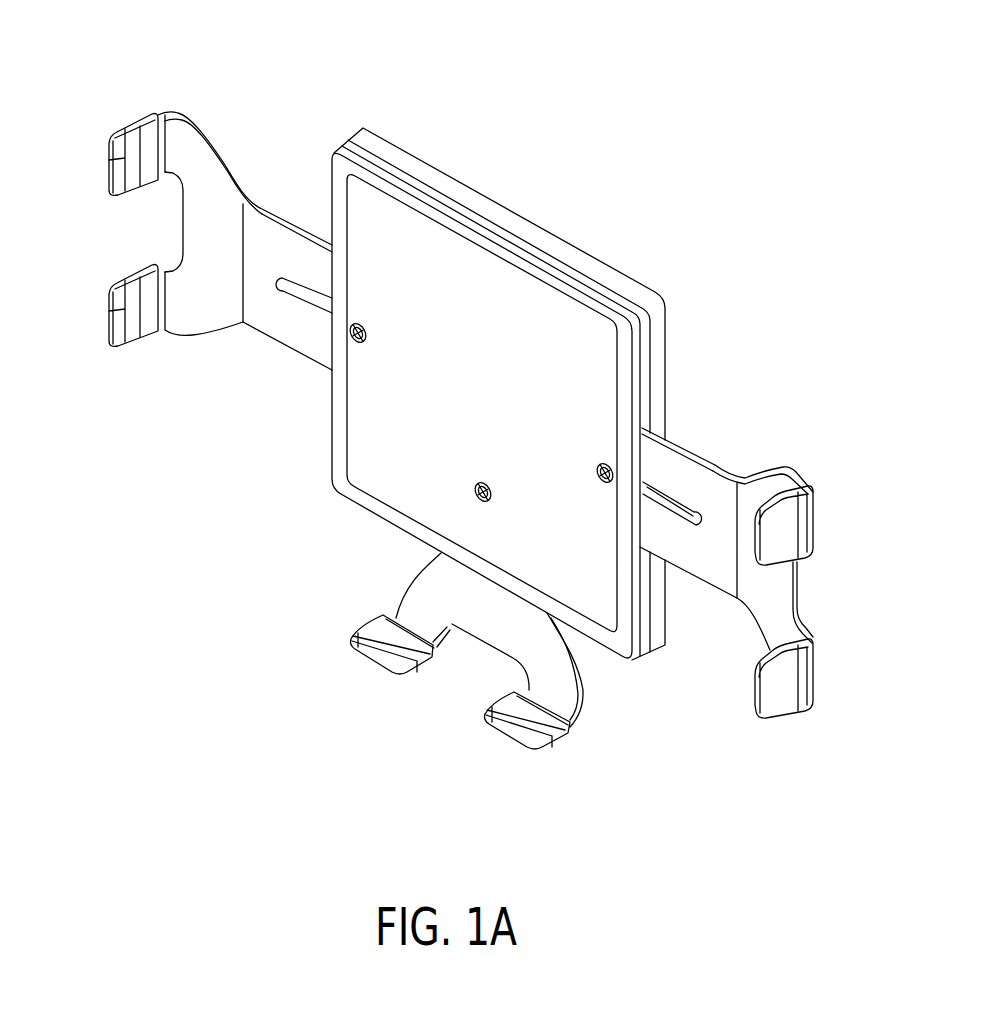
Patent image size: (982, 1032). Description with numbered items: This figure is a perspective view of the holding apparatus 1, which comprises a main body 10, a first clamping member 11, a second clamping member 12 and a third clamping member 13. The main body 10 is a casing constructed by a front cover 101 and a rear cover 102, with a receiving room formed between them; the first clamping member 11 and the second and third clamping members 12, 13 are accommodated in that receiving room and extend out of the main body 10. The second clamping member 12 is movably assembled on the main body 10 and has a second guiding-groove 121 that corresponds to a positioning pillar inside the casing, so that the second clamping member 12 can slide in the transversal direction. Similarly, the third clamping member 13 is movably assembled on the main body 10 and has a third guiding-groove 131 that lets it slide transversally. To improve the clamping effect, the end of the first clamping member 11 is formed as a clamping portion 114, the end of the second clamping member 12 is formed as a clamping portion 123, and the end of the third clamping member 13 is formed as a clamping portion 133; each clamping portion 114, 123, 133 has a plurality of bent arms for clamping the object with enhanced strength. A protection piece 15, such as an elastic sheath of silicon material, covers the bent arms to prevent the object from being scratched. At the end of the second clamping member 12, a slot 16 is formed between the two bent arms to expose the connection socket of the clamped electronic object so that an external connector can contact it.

The holding apparatus 1 is at (661, 52).
The main body 10 is at (480, 144).
The front cover 101 is at (525, 295).
The rear cover 102 is at (622, 270).
The first clamping member 11 is at (445, 573).
The clamping portion 114 is at (404, 608).
The second clamping member 12 is at (259, 233).
The second guiding-groove 121 is at (300, 287).
The clamping portion 123 is at (178, 133).
The third clamping member 13 is at (716, 480).
The third guiding-groove 131 is at (684, 500).
The clamping portion 133 is at (785, 487).
The protection piece 15 is at (129, 128).
The slot 16 is at (153, 233).